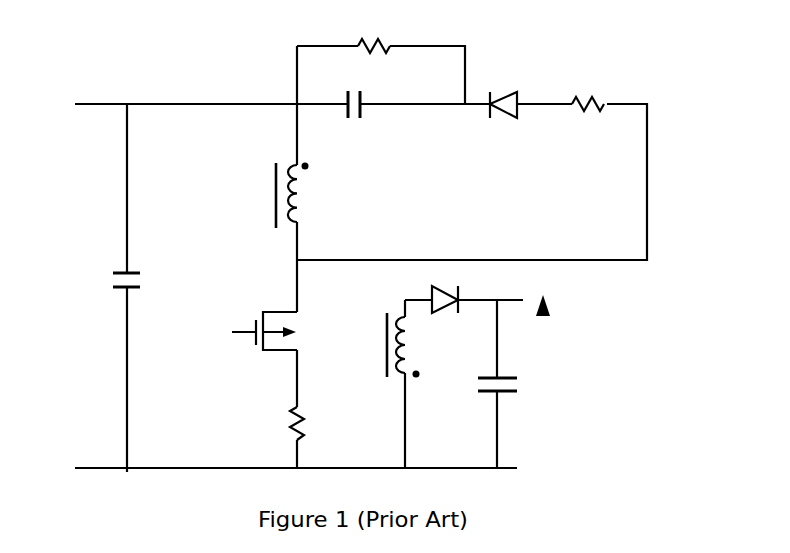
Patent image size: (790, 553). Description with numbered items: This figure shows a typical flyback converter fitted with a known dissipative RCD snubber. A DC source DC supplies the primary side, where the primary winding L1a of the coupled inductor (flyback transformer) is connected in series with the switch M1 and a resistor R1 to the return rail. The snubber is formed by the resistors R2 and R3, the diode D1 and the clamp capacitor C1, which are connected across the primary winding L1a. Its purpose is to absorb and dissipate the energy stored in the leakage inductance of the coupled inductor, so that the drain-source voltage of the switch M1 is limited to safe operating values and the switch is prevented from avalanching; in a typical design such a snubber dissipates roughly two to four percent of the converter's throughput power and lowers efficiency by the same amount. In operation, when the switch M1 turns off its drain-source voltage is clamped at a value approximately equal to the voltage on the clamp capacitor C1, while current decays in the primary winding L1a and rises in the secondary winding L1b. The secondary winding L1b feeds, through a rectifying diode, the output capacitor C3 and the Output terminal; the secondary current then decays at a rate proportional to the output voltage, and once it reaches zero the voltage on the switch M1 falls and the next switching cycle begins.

The DC input source DC is at (144, 288).
The snubber resistor R3 is at (380, 31).
The clamp capacitor C1 is at (341, 115).
The snubber diode D1 is at (504, 84).
The snubber resistor R2 is at (591, 87).
The primary winding L1a is at (267, 196).
The switch M1 is at (282, 331).
The resistor R1 is at (314, 423).
The secondary winding L1b is at (426, 332).
The output capacitor C3 is at (488, 397).
The output Output is at (579, 308).